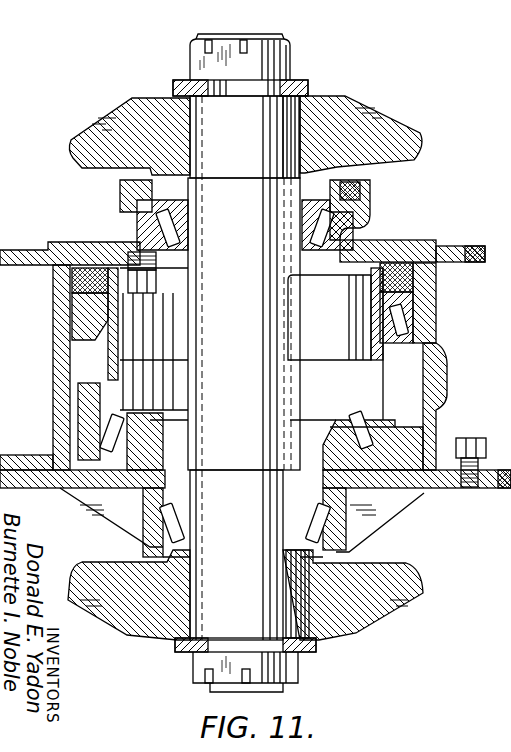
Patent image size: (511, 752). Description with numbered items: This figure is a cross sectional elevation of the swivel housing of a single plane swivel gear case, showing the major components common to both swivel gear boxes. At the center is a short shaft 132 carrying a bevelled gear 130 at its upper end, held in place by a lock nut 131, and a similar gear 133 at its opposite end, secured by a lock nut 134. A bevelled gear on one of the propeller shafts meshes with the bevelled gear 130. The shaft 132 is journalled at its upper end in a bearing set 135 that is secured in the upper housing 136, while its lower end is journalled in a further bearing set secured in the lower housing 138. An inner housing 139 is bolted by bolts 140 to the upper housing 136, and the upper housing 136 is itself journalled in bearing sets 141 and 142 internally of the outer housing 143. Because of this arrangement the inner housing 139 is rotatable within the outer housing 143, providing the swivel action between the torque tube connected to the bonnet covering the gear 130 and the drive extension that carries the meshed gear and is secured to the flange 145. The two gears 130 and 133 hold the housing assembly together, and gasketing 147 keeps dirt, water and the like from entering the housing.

The bevelled gear 130 is at (323, 118).
The lock nut 131 is at (284, 70).
The short shaft 132 is at (250, 312).
The gear 133 is at (371, 587).
The lock nut 134 is at (210, 665).
The bearing set 135 is at (346, 220).
The upper housing 136 is at (371, 255).
The lower housing 138 is at (393, 470).
The inner housing 139 is at (373, 353).
The bolts 140 is at (150, 285).
The bearing set 141 is at (416, 320).
The bearing set 142 is at (366, 417).
The outer housing 143 is at (436, 393).
The flange 145 is at (448, 252).
The gasketing 147 is at (404, 279).